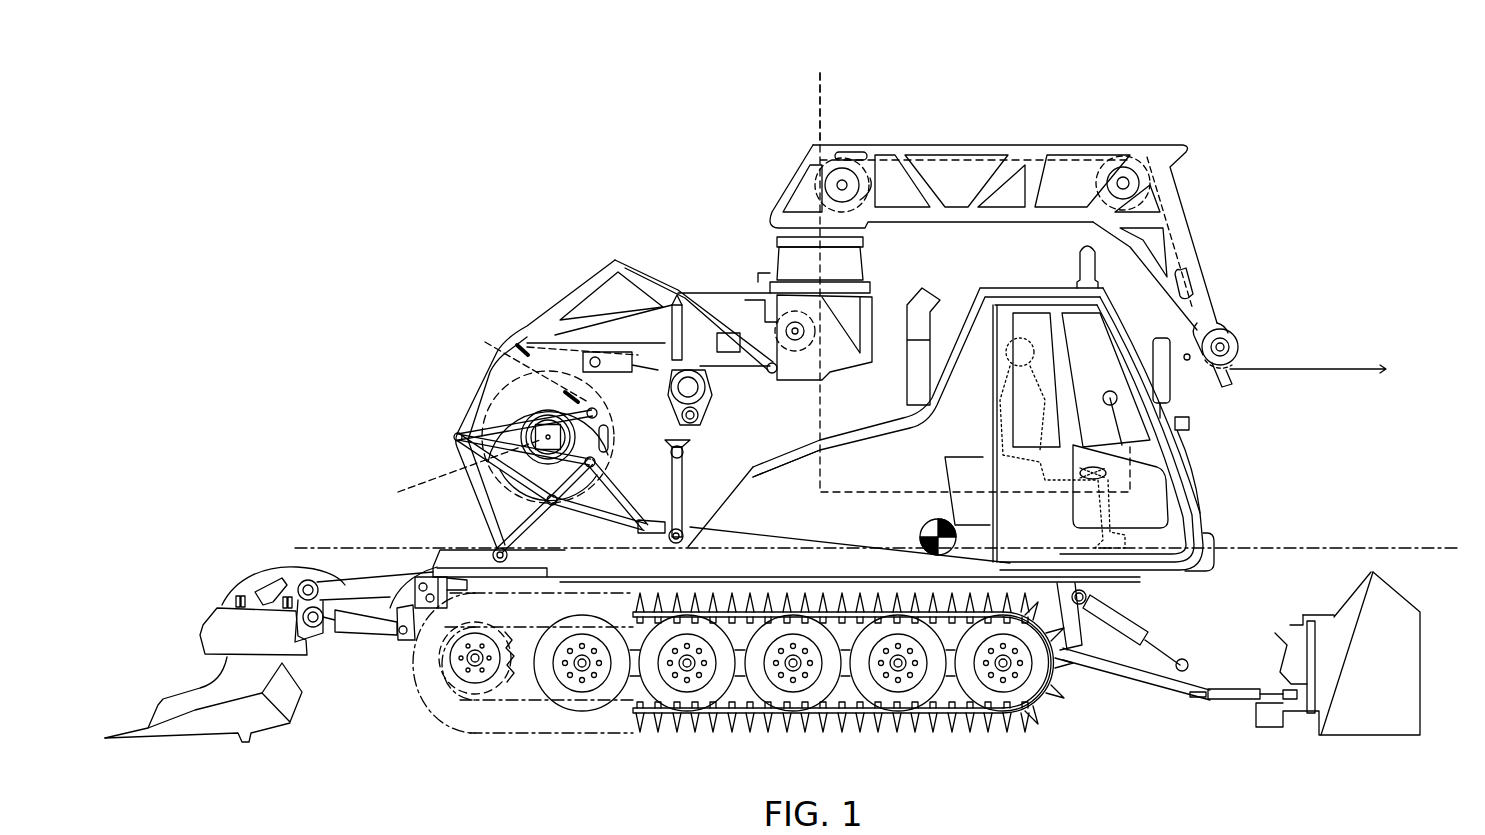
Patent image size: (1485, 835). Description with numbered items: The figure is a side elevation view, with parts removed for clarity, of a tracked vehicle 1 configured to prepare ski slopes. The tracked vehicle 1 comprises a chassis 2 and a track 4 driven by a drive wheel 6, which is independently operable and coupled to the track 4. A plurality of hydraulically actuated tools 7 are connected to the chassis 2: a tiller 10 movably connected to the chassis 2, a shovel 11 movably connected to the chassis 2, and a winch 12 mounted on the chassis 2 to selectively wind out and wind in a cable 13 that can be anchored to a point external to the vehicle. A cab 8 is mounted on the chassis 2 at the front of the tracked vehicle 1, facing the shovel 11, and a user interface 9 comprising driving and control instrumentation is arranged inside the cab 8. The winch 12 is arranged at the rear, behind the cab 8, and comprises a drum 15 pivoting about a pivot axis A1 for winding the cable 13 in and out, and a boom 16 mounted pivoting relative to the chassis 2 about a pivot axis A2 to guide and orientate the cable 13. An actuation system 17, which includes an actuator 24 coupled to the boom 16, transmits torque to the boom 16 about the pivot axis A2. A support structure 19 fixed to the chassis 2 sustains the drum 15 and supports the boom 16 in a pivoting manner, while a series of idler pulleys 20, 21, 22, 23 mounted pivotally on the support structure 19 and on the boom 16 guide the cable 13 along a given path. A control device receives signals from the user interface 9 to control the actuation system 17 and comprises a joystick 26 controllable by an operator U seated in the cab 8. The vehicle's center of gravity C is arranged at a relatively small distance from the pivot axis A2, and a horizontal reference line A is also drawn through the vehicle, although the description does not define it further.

The tracked vehicle 1 is at (420, 208).
The chassis 2 is at (733, 503).
The track 4 is at (585, 720).
The drive wheel 6 is at (478, 680).
The hydraulically actuated tools 7 is at (178, 585).
The cab 8 is at (1150, 578).
The user interface 9 is at (1192, 440).
The tiller 10 is at (252, 715).
The shovel 11 is at (1360, 710).
The winch 12 is at (843, 113).
The cable 13 is at (1342, 368).
The drum 15 is at (520, 405).
The boom 16 is at (1028, 153).
The actuation system 17 is at (672, 248).
The support structure 19 is at (527, 330).
The idler pulley 20 is at (795, 348).
The idler pulley 21 is at (880, 160).
The idler pulley 22 is at (1110, 150).
The idler pulley 23 is at (1225, 332).
The actuator 24 is at (800, 265).
The joystick 26 is at (1100, 470).
The longitudinal axis A is at (1390, 548).
The pivot axis A1 is at (460, 470).
The pivot axis A2 is at (818, 115).
The center of gravity C is at (920, 535).
The operator U is at (1020, 350).